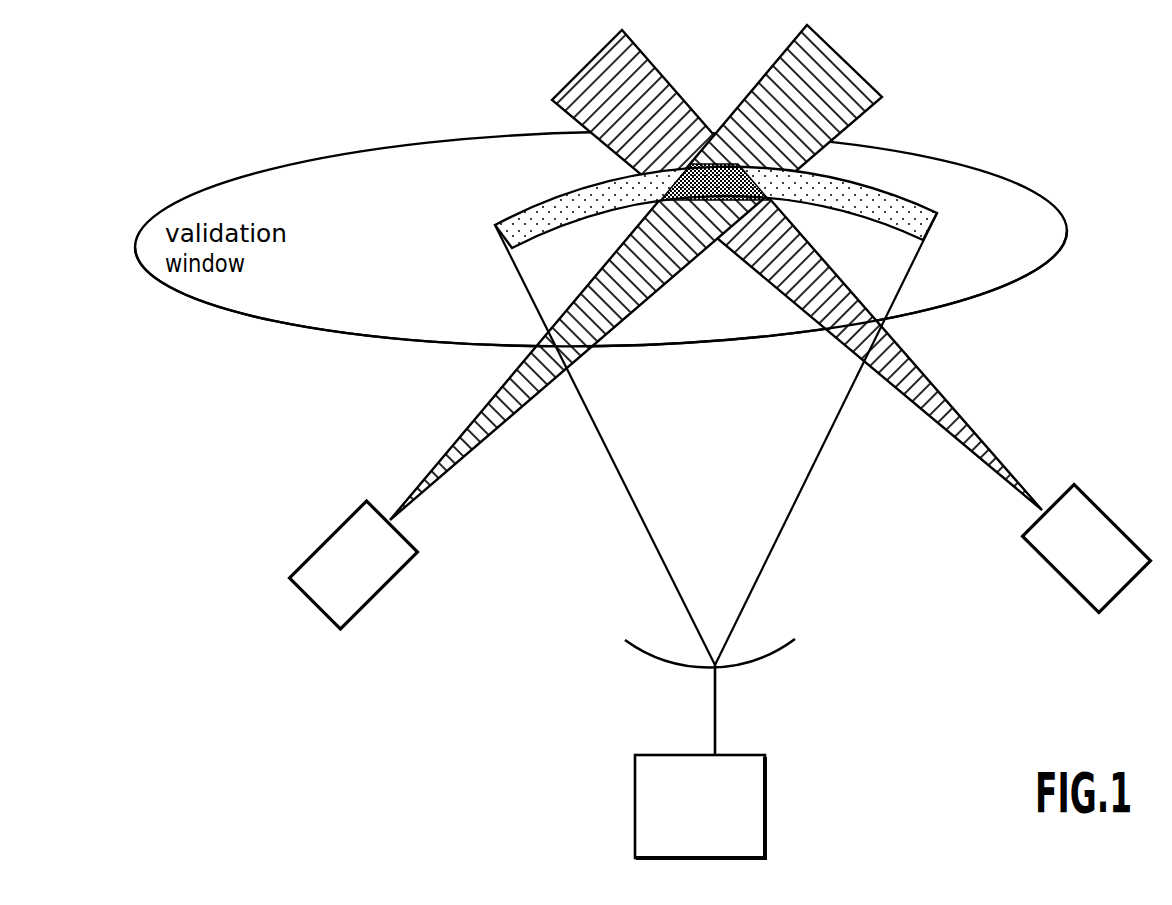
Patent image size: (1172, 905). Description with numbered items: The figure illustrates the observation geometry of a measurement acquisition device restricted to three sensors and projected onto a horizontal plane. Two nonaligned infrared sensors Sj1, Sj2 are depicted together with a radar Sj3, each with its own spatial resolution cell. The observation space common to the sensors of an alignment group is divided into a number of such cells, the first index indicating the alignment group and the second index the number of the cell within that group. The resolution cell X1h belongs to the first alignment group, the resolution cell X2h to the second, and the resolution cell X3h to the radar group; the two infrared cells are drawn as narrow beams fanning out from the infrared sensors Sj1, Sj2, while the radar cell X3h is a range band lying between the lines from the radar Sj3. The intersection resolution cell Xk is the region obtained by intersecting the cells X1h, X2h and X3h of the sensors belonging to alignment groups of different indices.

The spatial resolution cell X1h is at (840, 96).
The spatial resolution cell X2h is at (606, 97).
The spatial resolution cell X3h is at (535, 218).
The intersection resolution cell Xk is at (708, 172).
The infrared sensor Sj1 is at (354, 565).
The infrared sensor Sj2 is at (1087, 549).
The radar Sj3 is at (716, 536).